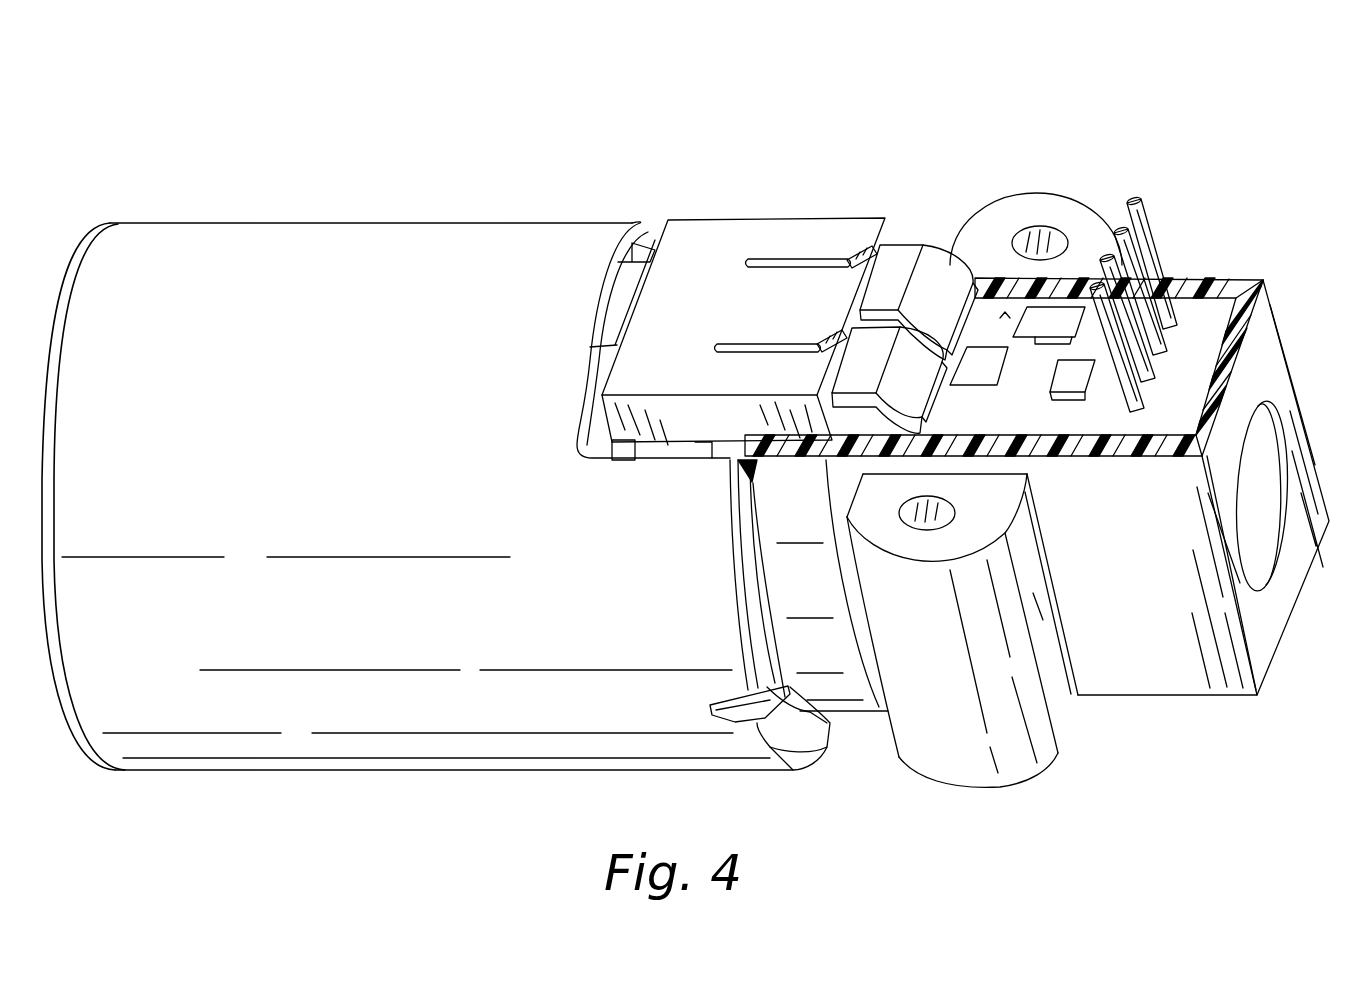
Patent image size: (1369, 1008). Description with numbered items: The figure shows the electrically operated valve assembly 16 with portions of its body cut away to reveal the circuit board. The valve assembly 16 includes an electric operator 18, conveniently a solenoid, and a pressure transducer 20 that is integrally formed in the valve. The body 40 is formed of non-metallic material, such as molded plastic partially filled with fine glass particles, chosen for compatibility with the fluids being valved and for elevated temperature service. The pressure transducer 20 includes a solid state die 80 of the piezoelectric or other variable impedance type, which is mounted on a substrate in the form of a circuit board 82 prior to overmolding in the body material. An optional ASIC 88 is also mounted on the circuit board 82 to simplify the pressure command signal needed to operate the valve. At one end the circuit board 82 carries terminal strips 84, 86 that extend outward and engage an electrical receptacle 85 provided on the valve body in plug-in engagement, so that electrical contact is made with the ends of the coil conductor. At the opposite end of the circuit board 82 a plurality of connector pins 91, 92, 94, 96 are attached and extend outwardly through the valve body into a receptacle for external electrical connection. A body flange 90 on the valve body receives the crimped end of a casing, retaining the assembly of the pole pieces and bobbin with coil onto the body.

The valve assembly 16 is at (1272, 127).
The electric operator 18 is at (397, 196).
The pressure transducer 20 is at (1057, 458).
The body 40 is at (1120, 695).
The die 80 is at (980, 345).
The circuit board 82 is at (1005, 318).
The terminal strip 84 is at (855, 357).
The electrical receptacle 85 is at (752, 220).
The terminal strip 86 is at (900, 245).
The ASIC 88 is at (1072, 395).
The body flange 90 is at (770, 693).
The connector pin 91 is at (1110, 345).
The connector pin 92 is at (1135, 300).
The connector pin 94 is at (1140, 265).
The connector pin 96 is at (1134, 201).